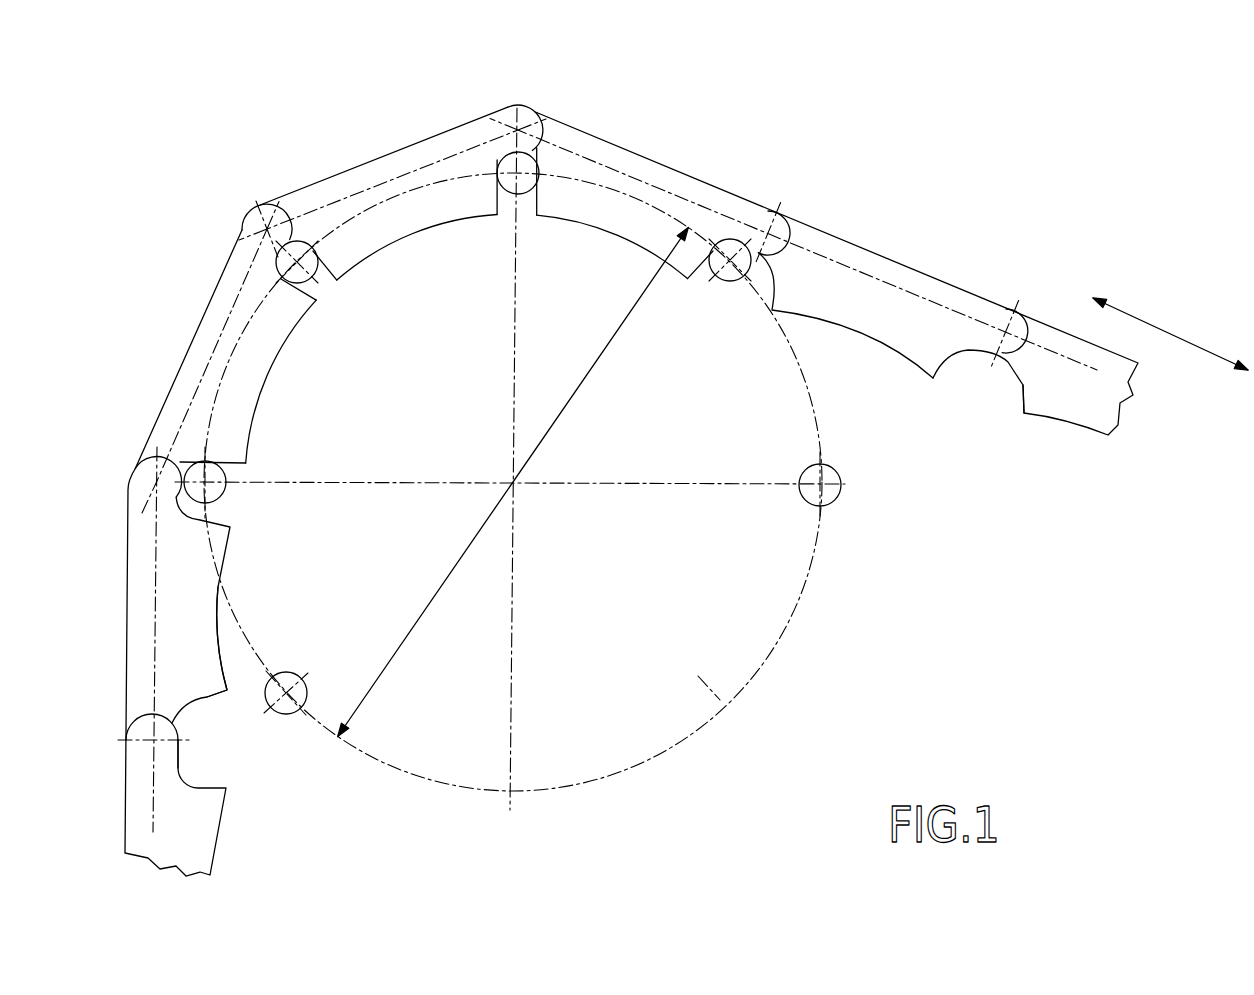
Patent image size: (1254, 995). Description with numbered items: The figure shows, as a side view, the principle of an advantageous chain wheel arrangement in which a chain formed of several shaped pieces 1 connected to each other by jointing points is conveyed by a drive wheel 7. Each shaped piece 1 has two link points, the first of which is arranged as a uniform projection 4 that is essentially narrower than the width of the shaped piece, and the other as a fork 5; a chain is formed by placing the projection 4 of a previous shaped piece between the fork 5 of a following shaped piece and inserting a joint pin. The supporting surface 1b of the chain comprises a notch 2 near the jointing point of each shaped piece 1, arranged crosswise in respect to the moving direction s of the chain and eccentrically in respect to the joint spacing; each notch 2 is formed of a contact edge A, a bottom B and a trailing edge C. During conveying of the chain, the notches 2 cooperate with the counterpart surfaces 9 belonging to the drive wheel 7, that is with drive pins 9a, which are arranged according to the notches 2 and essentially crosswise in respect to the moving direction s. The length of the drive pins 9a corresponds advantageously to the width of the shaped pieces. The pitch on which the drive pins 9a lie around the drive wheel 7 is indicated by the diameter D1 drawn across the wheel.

The shaped piece 1 is at (372, 190).
The supporting surface 1b is at (938, 392).
The notch 2 is at (1003, 392).
The projection 4 is at (532, 113).
The fork 5 is at (252, 230).
The drive wheel 7 is at (752, 560).
The counterpart surface 9 is at (828, 508).
The drive pin 9a is at (937, 577).
The contact edge A is at (215, 786).
The bottom B is at (181, 735).
The trailing edge C is at (220, 698).
The pitch circle diameter D1 is at (423, 603).
The moving direction s is at (1173, 333).